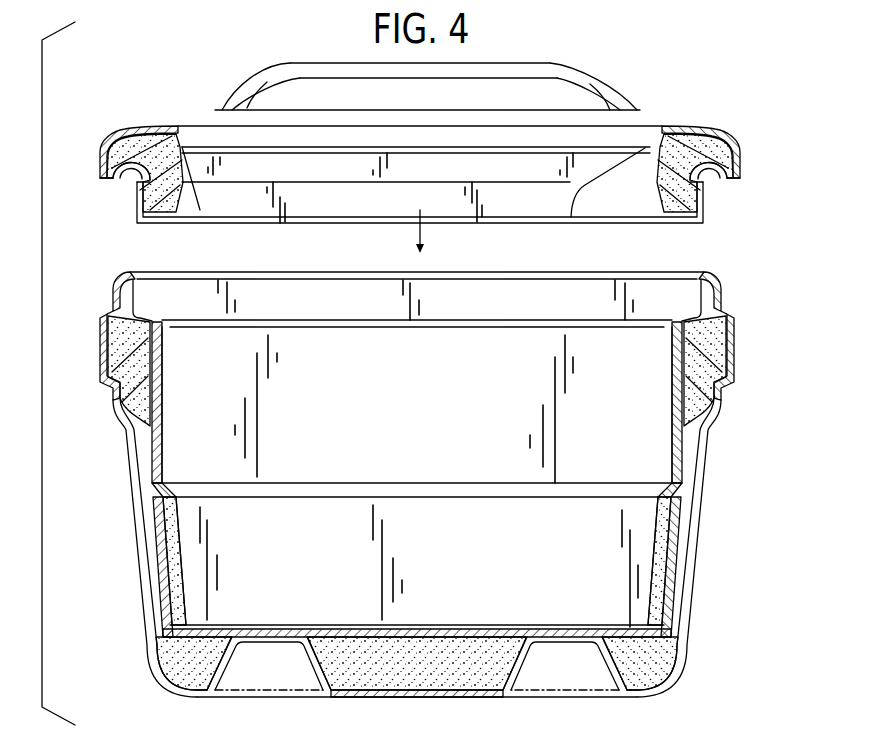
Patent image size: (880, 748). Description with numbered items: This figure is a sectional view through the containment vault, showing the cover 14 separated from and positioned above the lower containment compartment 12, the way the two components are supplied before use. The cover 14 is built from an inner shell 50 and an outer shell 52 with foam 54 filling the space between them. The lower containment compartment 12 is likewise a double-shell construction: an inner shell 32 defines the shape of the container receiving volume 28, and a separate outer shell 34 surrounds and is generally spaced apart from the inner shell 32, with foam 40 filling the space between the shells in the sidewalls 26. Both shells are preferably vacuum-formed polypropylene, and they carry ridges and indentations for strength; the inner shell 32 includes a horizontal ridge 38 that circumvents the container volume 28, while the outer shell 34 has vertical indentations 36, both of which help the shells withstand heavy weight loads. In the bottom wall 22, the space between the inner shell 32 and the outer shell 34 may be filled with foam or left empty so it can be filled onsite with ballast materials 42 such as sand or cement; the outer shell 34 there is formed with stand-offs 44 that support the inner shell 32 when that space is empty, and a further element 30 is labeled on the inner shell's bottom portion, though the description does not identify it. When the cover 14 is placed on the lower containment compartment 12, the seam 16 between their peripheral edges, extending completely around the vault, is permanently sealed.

The lower containment compartment 12 is at (755, 275).
The cover 14 is at (198, 69).
The seam 16 is at (112, 182).
The bottom wall 22 is at (472, 640).
The sidewalls 26 is at (160, 461).
The container receiving volume 28 is at (428, 394).
The bottom wall of liner 30 is at (420, 625).
The inner shell 32 is at (157, 381).
The outer shell 34 is at (114, 394).
The indentations 36 is at (152, 552).
The horizontal ridge 38 is at (170, 490).
The foam 40 is at (125, 353).
The ballast materials 42 is at (437, 660).
The stand-offs 44 is at (233, 668).
The inner shell 50 is at (180, 207).
The outer shell 52 is at (133, 130).
The foam 54 is at (148, 143).